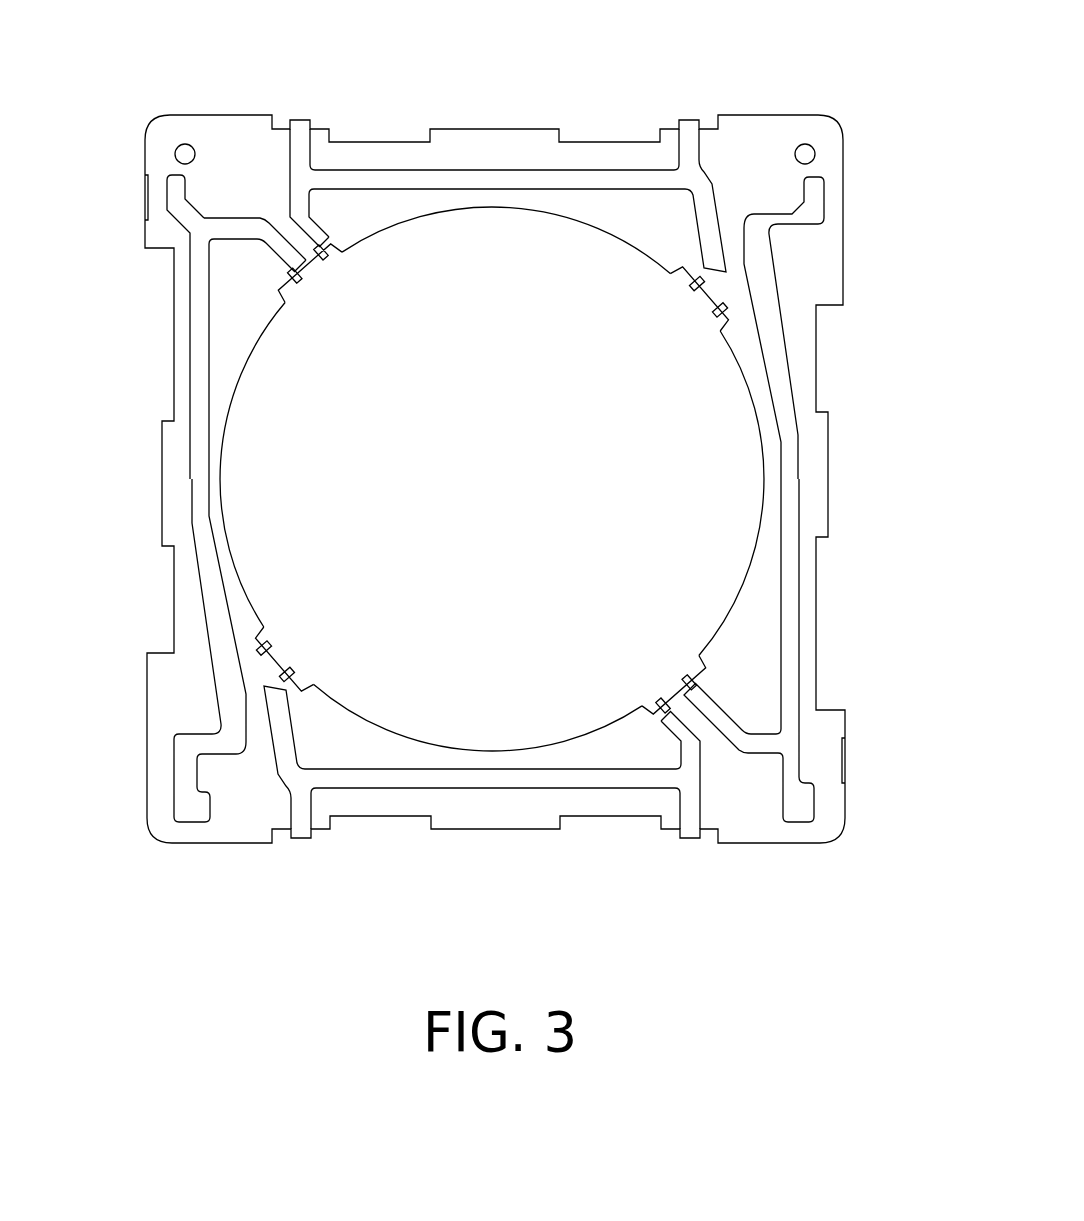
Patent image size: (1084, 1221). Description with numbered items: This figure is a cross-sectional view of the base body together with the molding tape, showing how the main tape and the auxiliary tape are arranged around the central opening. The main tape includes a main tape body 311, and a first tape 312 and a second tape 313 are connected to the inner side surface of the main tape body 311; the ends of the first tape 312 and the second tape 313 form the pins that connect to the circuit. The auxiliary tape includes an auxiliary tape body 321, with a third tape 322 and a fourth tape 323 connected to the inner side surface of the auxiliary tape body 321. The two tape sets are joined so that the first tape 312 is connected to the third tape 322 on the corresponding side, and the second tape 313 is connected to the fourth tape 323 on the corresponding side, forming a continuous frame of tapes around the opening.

The main tape body 311 is at (193, 452).
The first tape 312 is at (273, 245).
The second tape 313 is at (727, 303).
The auxiliary tape body 321 is at (480, 177).
The third tape 322 is at (316, 230).
The fourth tape 323 is at (705, 215).